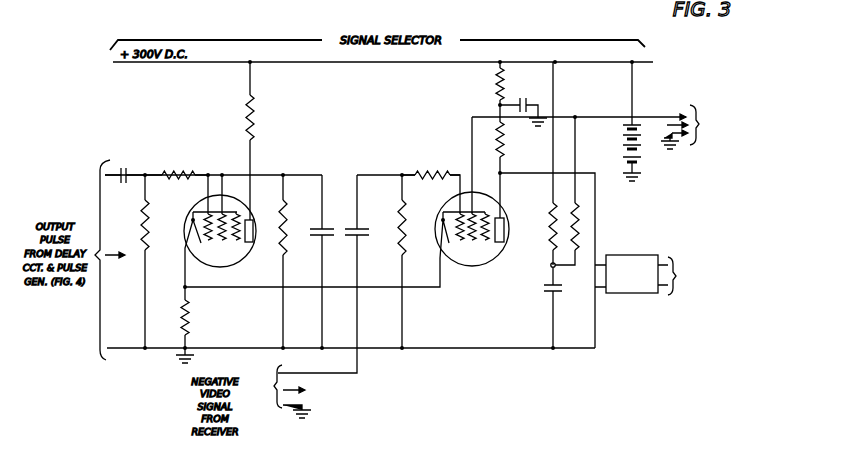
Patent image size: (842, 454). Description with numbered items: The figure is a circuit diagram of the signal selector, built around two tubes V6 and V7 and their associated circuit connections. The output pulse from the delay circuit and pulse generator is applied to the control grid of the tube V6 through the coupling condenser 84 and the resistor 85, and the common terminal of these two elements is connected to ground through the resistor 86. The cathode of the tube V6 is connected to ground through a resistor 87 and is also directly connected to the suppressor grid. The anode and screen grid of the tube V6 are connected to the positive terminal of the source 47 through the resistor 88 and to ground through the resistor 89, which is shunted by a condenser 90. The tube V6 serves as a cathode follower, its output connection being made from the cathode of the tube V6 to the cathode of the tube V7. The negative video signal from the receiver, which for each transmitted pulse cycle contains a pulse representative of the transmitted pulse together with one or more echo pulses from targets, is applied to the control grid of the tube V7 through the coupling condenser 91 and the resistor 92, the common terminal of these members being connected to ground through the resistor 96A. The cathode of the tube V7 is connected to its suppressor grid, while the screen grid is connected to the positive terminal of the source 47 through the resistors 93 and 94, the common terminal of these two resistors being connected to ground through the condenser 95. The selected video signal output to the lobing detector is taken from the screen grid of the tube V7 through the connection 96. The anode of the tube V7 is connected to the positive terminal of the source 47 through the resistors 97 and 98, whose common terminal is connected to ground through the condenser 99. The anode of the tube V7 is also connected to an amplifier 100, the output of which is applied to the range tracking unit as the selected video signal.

The coupling condenser 84 is at (127, 183).
The resistor 85 is at (187, 183).
The resistor 86 is at (150, 245).
The resistor 87 is at (192, 305).
The resistor 88 is at (256, 112).
The resistor 89 is at (287, 245).
The condenser 90 is at (327, 228).
The coupling condenser 91 is at (370, 230).
The resistor 92 is at (446, 183).
The resistor 93 is at (577, 259).
The resistor 94 is at (548, 253).
The condenser 95 is at (544, 288).
The connection 96 is at (672, 114).
The resistor 96A is at (406, 246).
The resistor 97 is at (503, 138).
The resistor 98 is at (497, 74).
The condenser 99 is at (513, 100).
The amplifier 100 is at (644, 258).
The source 47 is at (622, 136).
The tube V6 is at (246, 201).
The tube V7 is at (496, 201).